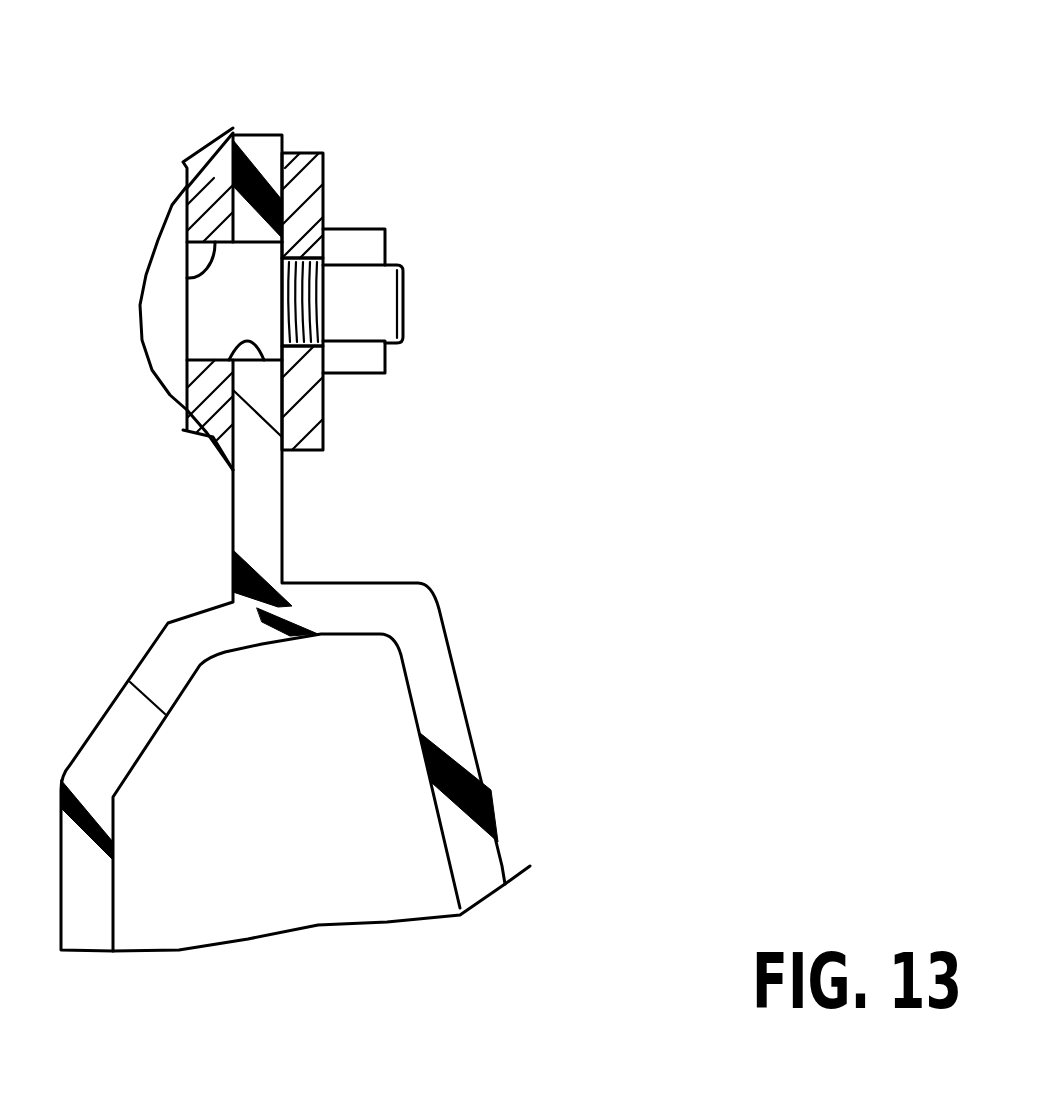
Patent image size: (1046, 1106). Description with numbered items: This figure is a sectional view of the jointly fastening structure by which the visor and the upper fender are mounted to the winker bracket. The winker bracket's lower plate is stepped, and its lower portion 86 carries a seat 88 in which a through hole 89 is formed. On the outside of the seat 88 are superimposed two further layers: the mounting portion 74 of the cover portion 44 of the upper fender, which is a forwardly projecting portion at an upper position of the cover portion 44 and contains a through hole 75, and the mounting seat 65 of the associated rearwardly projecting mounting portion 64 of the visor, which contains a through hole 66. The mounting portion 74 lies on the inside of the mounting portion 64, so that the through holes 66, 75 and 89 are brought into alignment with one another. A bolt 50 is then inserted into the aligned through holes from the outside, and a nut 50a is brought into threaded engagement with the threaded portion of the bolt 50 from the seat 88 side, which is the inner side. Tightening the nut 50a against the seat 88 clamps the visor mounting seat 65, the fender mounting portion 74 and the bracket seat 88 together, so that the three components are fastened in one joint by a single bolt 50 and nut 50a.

The cover portion 44 is at (448, 632).
The bolt 50 is at (160, 235).
The nut 50a is at (378, 242).
The mounting portion 64 is at (204, 150).
The mounting seat 65 is at (200, 383).
The through hole 66 is at (187, 278).
The mounting portion 74 is at (260, 147).
The through hole 75 is at (230, 362).
The lower portion 86 is at (315, 163).
The seat 88 is at (307, 364).
The through hole 89 is at (317, 296).